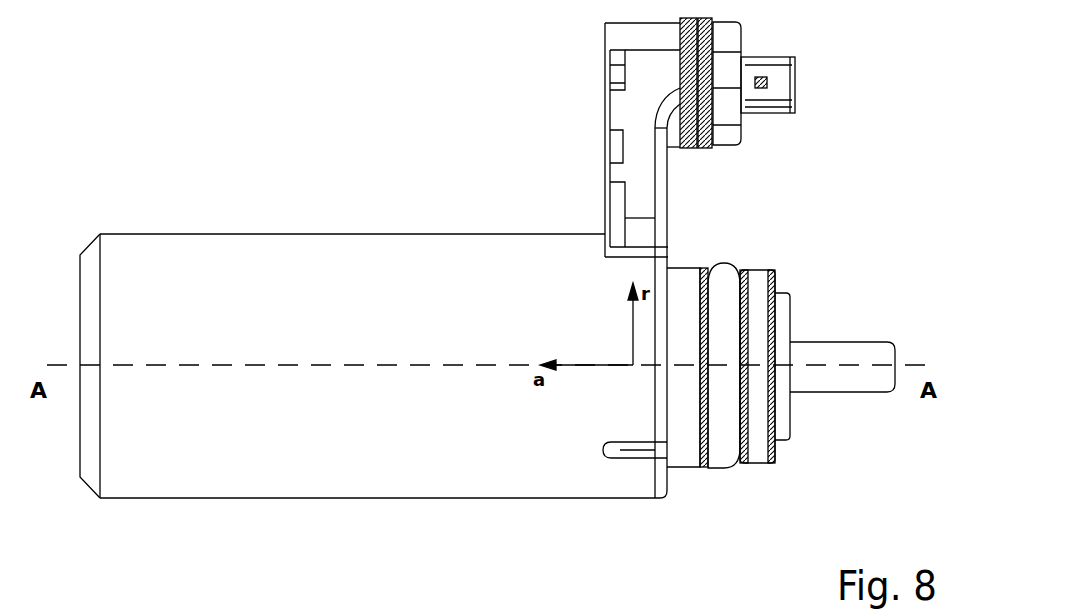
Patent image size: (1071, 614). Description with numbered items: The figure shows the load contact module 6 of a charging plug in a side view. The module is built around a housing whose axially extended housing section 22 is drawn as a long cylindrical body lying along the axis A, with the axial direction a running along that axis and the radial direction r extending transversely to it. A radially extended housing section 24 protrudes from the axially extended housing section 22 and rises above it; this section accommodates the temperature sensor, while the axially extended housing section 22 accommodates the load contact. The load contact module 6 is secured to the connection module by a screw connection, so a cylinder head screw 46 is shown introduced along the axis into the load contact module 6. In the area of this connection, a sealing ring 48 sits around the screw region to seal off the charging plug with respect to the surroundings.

The load contact module 6 is at (110, 66).
The axially extended housing section 22 is at (290, 470).
The radially extended housing section 24 is at (605, 108).
The cylinder head screw 46 is at (858, 340).
The sealing ring 48 is at (727, 437).